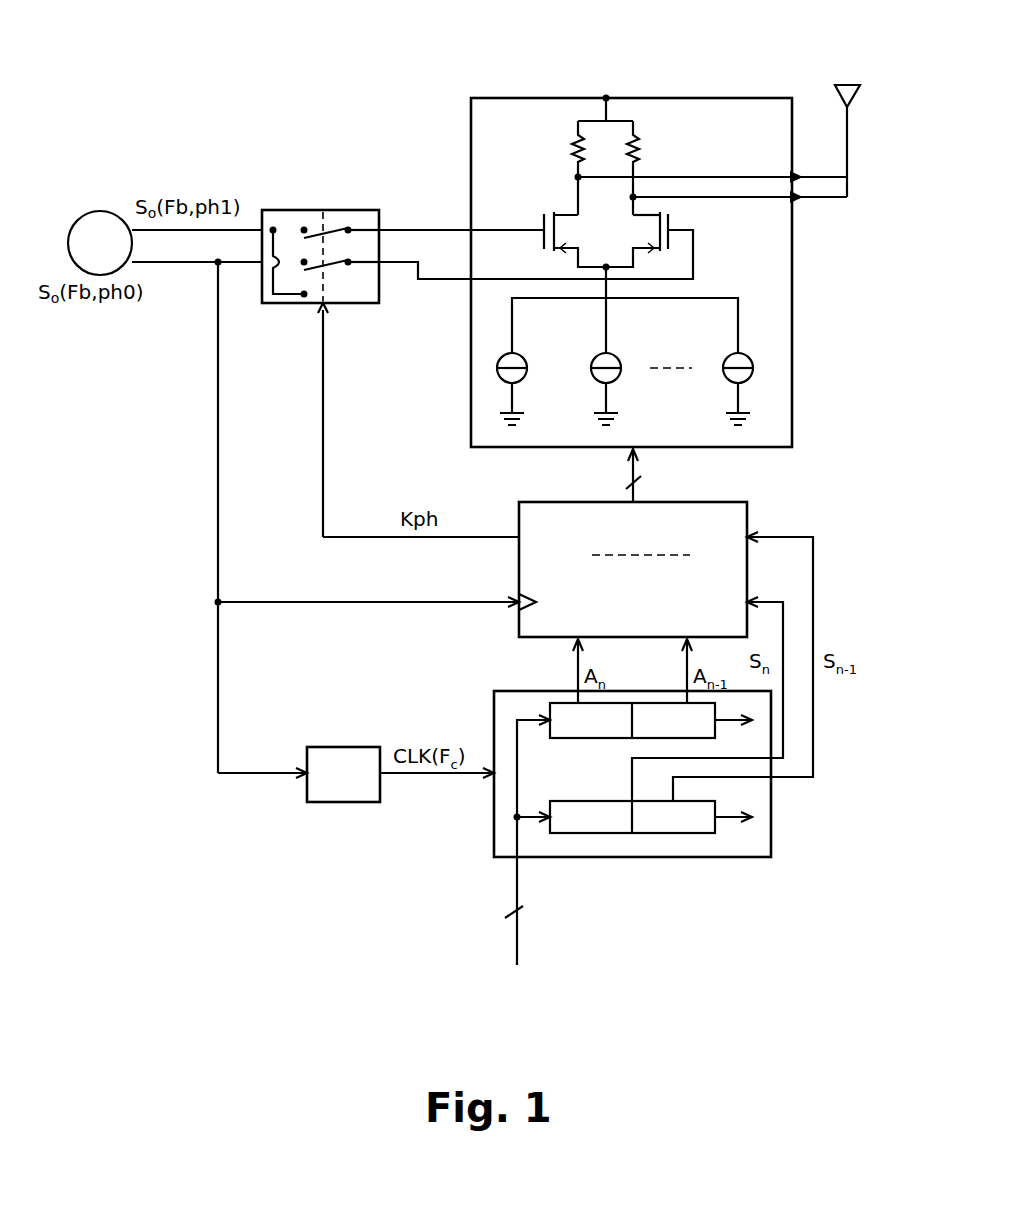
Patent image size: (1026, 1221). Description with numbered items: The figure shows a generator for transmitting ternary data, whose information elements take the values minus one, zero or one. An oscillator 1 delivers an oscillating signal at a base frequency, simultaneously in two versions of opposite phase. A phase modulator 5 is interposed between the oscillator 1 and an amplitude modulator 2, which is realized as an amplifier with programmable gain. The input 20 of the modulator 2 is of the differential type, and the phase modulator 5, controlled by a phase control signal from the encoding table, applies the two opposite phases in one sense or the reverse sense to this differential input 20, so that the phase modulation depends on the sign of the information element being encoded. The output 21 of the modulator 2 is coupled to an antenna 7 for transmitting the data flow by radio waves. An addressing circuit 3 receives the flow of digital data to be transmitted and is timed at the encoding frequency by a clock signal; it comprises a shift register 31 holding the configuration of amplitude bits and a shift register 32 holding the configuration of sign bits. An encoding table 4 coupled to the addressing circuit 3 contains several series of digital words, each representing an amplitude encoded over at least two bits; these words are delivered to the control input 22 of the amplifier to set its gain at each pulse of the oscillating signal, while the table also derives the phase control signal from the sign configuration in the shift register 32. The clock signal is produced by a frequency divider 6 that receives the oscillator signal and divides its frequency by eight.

The oscillator 1 is at (100, 211).
The modulator 2 is at (614, 230).
The addressing circuit 3 is at (591, 833).
The encoding table 4 is at (519, 520).
The phase modulator 5 is at (337, 209).
The frequency divider 6 is at (343, 774).
The antenna 7 is at (848, 147).
The input 20 is at (469, 230).
The output 21 is at (796, 172).
The control input 22 is at (626, 456).
The shift register 31 is at (562, 703).
The shift register 32 is at (683, 833).